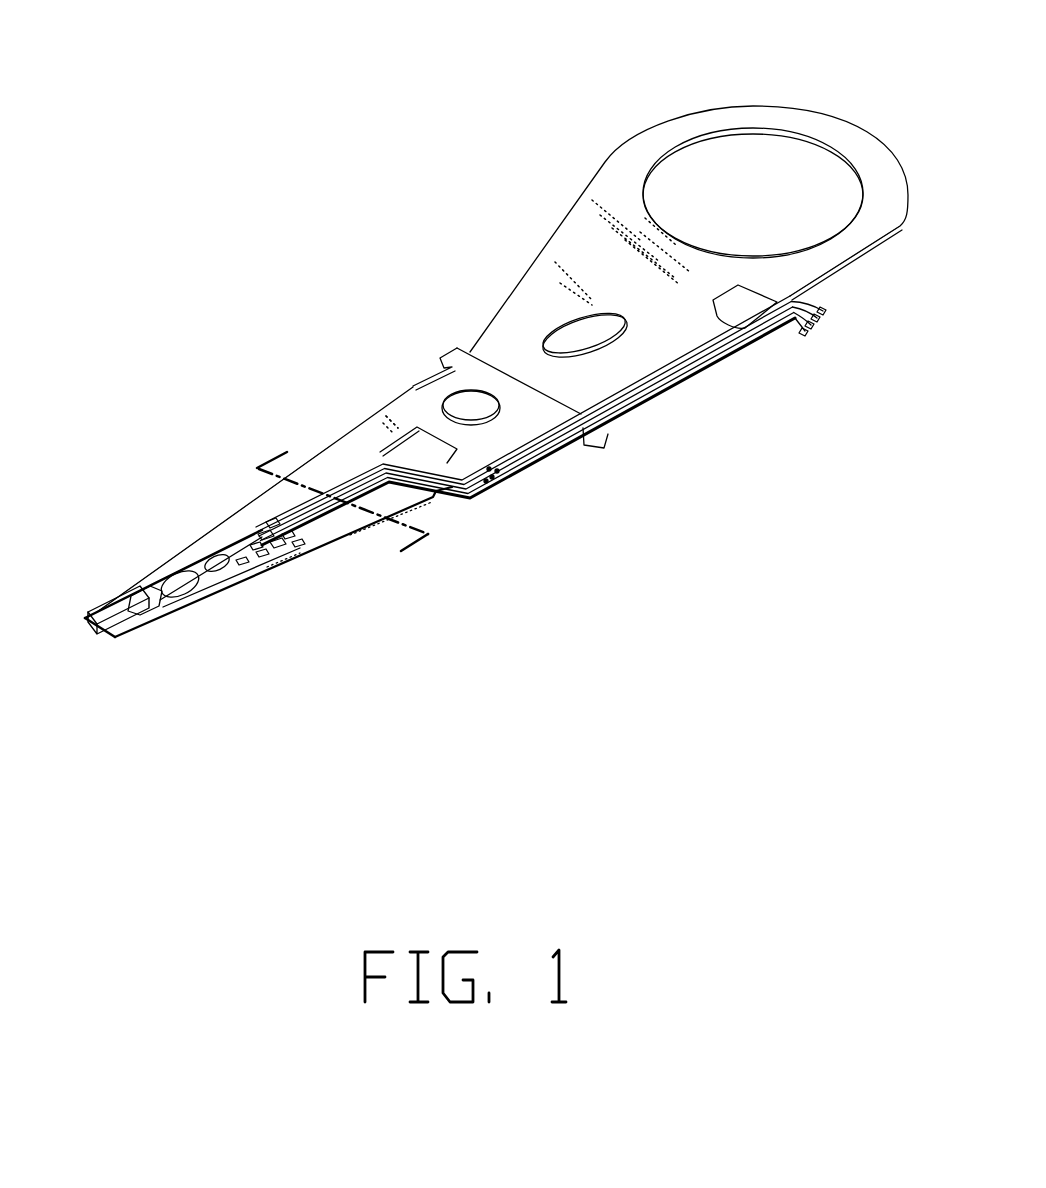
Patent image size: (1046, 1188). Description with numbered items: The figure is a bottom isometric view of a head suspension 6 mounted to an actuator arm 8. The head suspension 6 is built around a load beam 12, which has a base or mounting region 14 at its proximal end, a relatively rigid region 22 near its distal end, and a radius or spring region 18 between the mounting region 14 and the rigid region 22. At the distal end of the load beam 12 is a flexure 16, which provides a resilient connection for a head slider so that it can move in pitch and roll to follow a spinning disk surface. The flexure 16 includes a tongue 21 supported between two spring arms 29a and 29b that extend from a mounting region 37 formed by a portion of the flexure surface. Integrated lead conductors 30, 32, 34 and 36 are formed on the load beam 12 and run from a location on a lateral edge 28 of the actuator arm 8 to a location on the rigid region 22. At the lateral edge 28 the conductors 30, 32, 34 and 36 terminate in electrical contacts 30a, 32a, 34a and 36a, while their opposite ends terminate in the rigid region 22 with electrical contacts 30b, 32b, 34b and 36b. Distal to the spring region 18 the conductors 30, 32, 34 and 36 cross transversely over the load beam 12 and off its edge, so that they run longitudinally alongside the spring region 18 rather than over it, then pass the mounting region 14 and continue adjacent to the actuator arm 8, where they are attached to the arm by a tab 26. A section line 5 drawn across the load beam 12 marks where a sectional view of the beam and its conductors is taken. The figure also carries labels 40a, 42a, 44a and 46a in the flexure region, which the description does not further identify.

The head suspension 6 is at (362, 232).
The actuator arm 8 is at (675, 111).
The load beam 12 is at (380, 397).
The mounting region 14 is at (445, 368).
The flexure 16 is at (114, 660).
The spring region 18 is at (378, 411).
The tongue 21 is at (86, 640).
The rigid region 22 is at (322, 452).
The tab 26 is at (727, 293).
The lateral edge 28 is at (835, 275).
The electrical conductor 30 is at (473, 498).
The electrical conductor 32 is at (478, 497).
The electrical conductor 34 is at (498, 483).
The electrical conductor 36 is at (515, 472).
The electrical contact 30a is at (806, 332).
The electrical contact 32a is at (817, 325).
The electrical contact 34a is at (826, 317).
The electrical contact 36a is at (822, 308).
The electrical contact 30b is at (300, 560).
The electrical contact 32b is at (318, 540).
The electrical contact 34b is at (268, 528).
The electrical contact 36b is at (265, 525).
The spring arm 29a is at (113, 603).
The spring arm 29b is at (137, 627).
The mounting region of flexure 37 is at (190, 564).
The bond pad 40a is at (263, 560).
The bond pad 42a is at (232, 560).
The bond pad 44a is at (262, 532).
The bond pad 46a is at (262, 533).
The section line 5— 5 is at (332, 513).